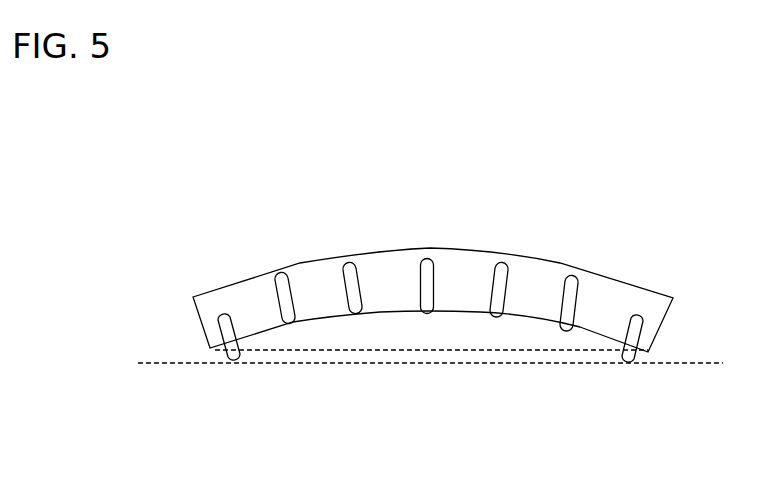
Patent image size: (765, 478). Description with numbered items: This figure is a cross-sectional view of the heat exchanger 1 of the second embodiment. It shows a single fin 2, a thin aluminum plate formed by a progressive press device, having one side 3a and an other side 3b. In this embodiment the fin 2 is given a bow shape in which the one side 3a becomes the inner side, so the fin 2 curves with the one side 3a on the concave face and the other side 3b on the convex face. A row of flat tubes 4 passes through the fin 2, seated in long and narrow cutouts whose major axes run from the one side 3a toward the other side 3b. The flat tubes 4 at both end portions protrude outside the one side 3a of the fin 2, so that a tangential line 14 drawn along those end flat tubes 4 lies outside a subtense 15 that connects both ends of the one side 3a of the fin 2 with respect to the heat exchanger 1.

The heat exchanger 1 is at (376, 250).
The fin 2 is at (537, 278).
The one side 3a is at (320, 318).
The other side 3b is at (258, 273).
The flat tubes 4 is at (627, 330).
The tangential line 14 is at (423, 362).
The subtense 15 is at (537, 350).